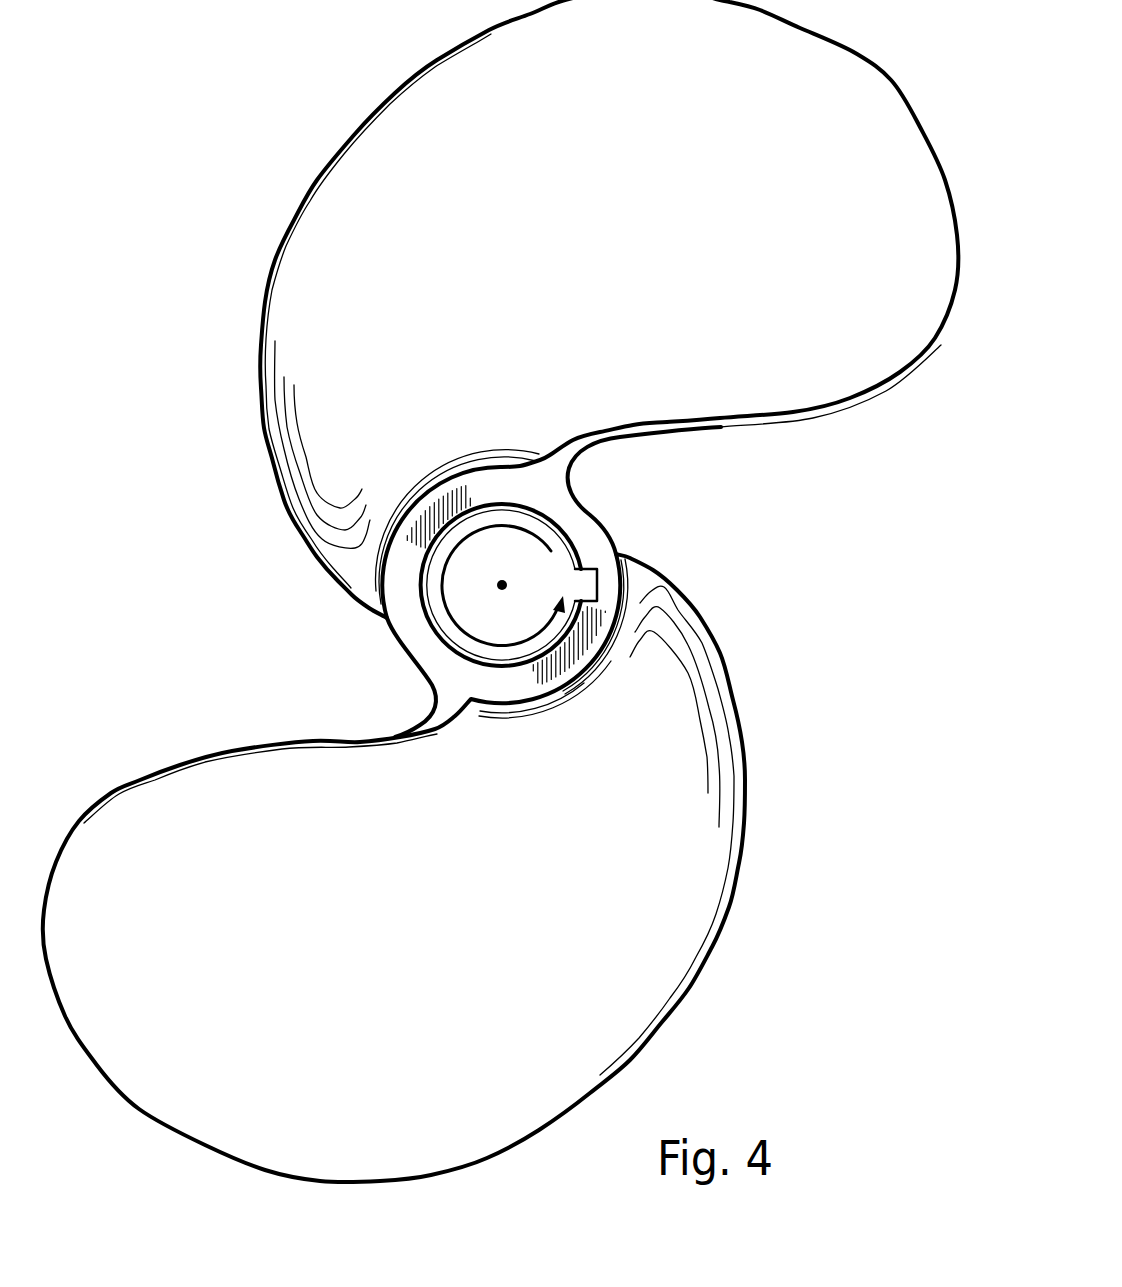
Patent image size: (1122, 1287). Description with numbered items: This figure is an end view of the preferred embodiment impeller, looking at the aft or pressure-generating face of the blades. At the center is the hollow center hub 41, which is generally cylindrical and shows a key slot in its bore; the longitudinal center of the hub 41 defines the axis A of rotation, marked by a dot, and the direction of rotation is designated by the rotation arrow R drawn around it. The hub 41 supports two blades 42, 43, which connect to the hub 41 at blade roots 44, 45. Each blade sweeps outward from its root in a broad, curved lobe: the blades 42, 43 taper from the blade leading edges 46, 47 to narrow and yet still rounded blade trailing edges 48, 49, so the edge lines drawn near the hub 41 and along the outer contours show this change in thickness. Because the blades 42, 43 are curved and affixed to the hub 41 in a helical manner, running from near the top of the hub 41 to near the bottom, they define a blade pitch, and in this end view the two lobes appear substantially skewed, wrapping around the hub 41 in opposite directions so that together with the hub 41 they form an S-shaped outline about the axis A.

The hollow center hub 41 is at (578, 569).
The blade 42 is at (866, 55).
The blade 43 is at (752, 852).
The blade root 44 is at (386, 621).
The blade root 45 is at (605, 533).
The blade leading edge 46 is at (333, 590).
The blade leading edge 47 is at (685, 593).
The blade trailing edge 48 is at (678, 432).
The blade trailing edge 49 is at (308, 737).
The rotation arrow R is at (442, 593).
The axis of rotation A is at (502, 586).